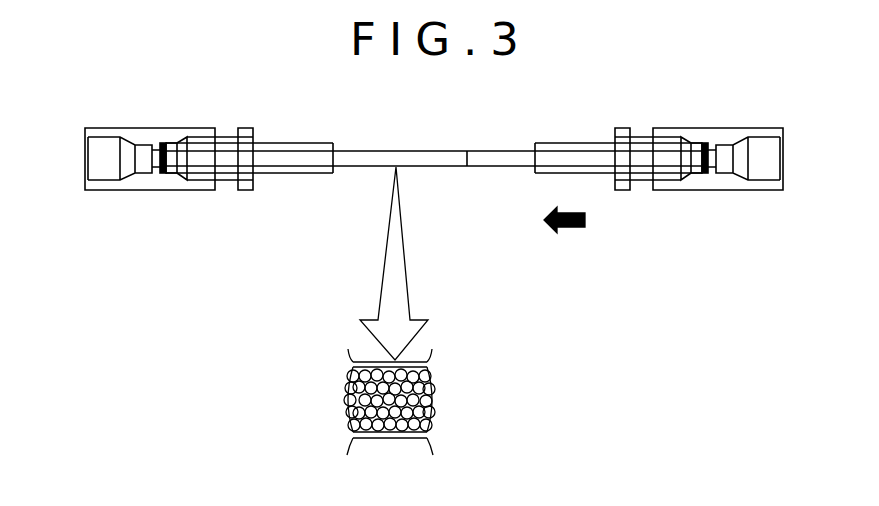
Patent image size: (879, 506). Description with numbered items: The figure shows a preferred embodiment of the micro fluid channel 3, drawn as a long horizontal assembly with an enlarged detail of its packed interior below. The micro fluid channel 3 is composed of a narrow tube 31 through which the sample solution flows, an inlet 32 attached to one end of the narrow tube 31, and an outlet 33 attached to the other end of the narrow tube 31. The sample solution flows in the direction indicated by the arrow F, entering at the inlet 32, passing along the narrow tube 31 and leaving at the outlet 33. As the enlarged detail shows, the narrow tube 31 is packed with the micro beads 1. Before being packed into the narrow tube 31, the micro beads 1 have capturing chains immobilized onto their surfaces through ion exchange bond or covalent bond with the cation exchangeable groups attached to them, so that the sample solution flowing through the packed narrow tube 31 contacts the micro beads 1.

The micro beads 1 is at (410, 420).
The micro fluid channel 3 is at (493, 151).
The narrow tube 31 is at (485, 168).
The inlet 32 is at (770, 162).
The outlet 33 is at (98, 161).
The arrow F is at (570, 229).